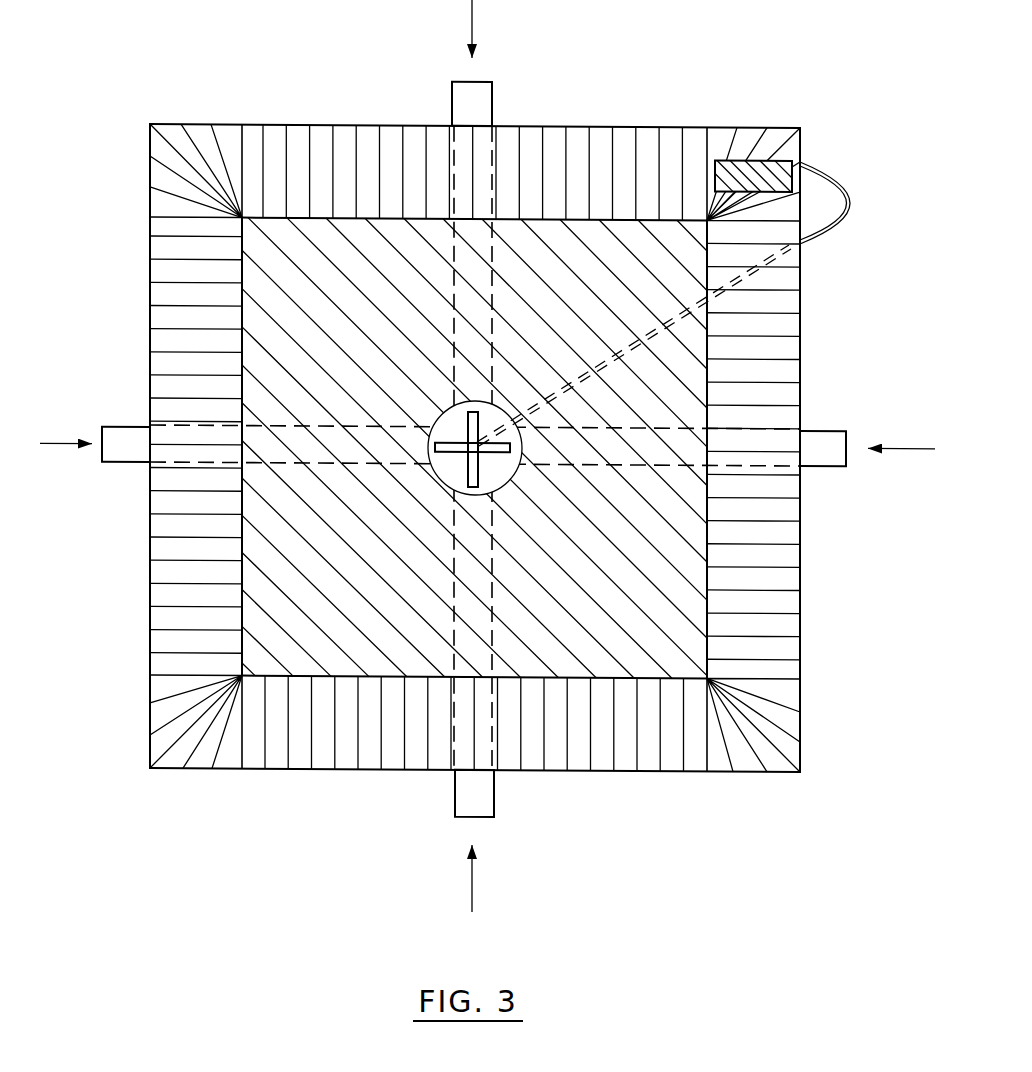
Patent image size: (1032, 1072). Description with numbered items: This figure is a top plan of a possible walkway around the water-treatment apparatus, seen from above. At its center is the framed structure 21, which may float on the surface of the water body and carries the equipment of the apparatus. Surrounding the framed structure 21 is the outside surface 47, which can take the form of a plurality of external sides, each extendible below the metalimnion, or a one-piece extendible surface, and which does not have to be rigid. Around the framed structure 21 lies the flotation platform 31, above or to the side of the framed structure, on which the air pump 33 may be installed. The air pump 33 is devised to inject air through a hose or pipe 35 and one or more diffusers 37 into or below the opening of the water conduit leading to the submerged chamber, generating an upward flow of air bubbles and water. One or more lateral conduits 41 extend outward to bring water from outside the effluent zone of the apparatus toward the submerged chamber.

The framed structure 21 is at (260, 122).
The flotation platform 31 is at (549, 178).
The air pump 33 is at (750, 170).
The hose or pipe 35 is at (850, 203).
The diffuser 37 is at (470, 472).
The lateral conduit 41 is at (478, 802).
The outside surface 47 is at (340, 125).